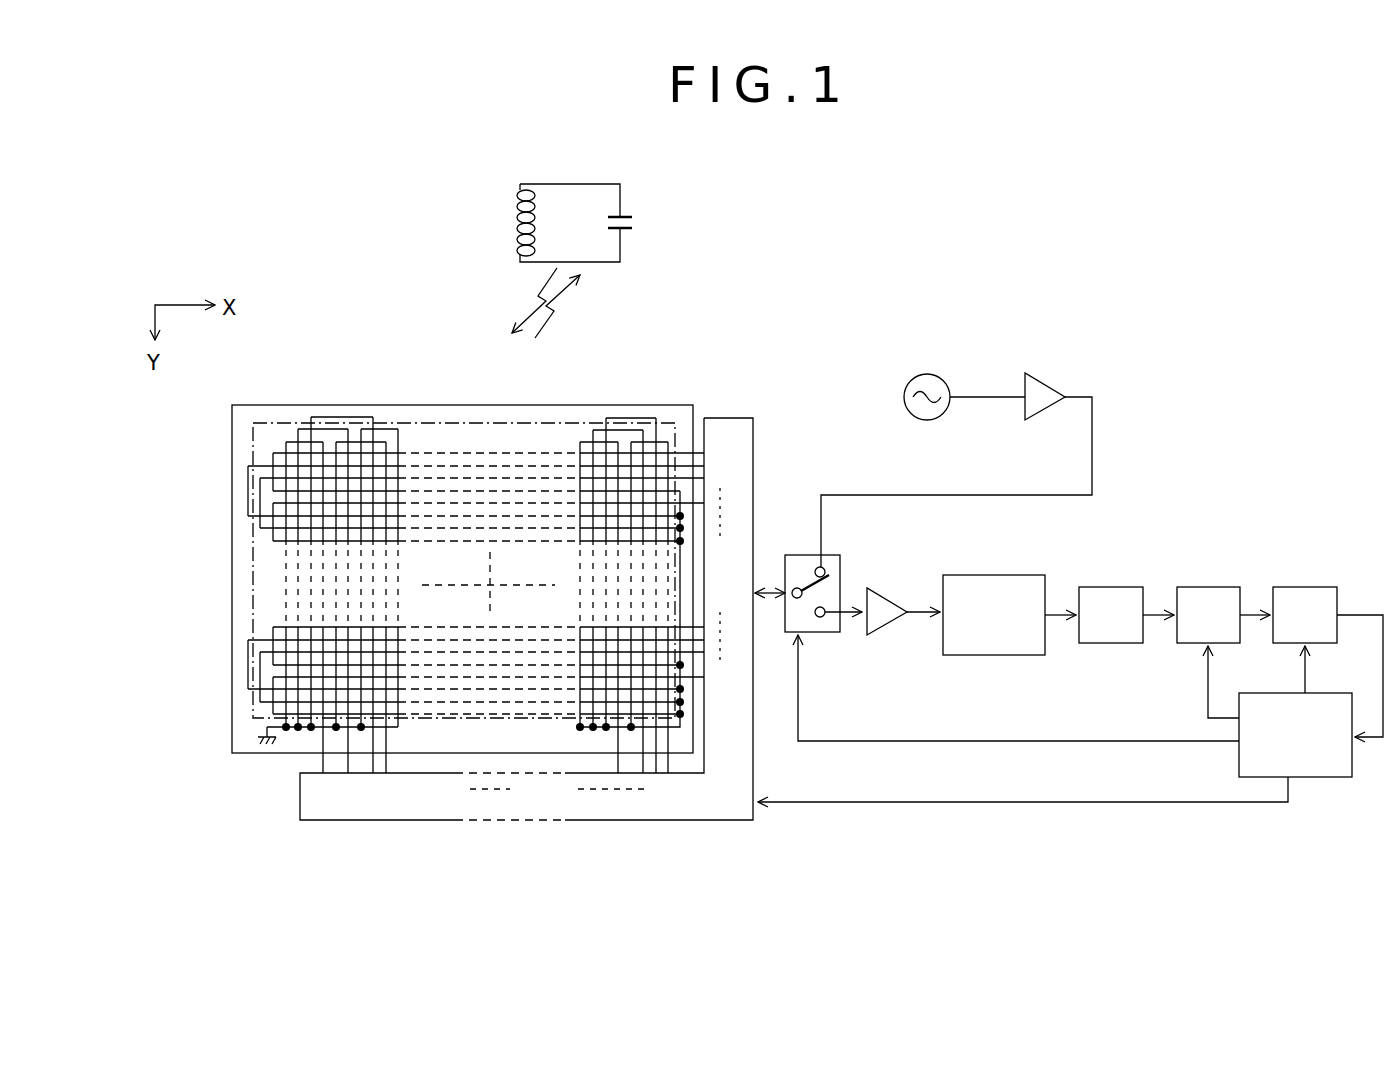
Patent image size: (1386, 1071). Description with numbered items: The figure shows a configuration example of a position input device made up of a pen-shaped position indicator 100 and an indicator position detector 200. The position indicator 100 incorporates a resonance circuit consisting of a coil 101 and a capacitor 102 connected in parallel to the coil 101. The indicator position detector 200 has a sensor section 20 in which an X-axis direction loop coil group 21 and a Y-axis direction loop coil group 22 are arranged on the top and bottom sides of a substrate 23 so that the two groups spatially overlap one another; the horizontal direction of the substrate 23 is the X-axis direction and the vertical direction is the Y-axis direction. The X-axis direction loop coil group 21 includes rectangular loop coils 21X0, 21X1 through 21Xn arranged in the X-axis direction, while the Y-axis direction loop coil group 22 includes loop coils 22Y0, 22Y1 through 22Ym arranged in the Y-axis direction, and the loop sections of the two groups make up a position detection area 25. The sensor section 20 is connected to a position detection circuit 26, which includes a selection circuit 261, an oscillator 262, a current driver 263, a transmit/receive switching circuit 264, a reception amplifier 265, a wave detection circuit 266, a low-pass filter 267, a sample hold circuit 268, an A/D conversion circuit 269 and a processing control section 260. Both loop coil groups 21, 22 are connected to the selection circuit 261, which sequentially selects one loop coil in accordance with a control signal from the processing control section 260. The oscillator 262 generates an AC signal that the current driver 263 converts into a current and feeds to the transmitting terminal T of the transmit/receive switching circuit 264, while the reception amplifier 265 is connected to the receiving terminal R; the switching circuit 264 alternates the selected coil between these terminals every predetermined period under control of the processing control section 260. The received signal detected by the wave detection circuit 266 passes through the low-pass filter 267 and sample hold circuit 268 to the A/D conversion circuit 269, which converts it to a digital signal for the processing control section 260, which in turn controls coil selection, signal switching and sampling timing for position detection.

The position indicator 100 is at (552, 200).
The coil 101 is at (517, 221).
The capacitor 102 is at (630, 232).
The sensor section 20 is at (413, 526).
The X-axis direction loop coil group 21 is at (475, 542).
The loop coil 21X0 is at (294, 428).
The loop coil 21X1 is at (343, 428).
The loop coil 21Xn is at (626, 569).
The Y-axis direction loop coil group 22 is at (413, 571).
The loop coil 22Y0 is at (272, 455).
The loop coil 22Y1 is at (249, 495).
The loop coil 22Ym is at (436, 664).
The substrate 23 is at (257, 418).
The position detection area 25 is at (253, 425).
The indicator position detector 200 is at (841, 552).
The selection circuit 261 is at (731, 417).
The position detection circuit 26 is at (977, 457).
The oscillator 262 is at (921, 425).
The current driver 263 is at (1048, 405).
The transmit/receive switching circuit 264 is at (793, 553).
The reception amplifier 265 is at (888, 625).
The wave detection circuit 266 is at (998, 573).
The low-pass filter 267 is at (1092, 586).
The sample hold circuit 268 is at (1192, 586).
The A/D conversion circuit 269 is at (1287, 586).
The processing control section 260 is at (1340, 778).